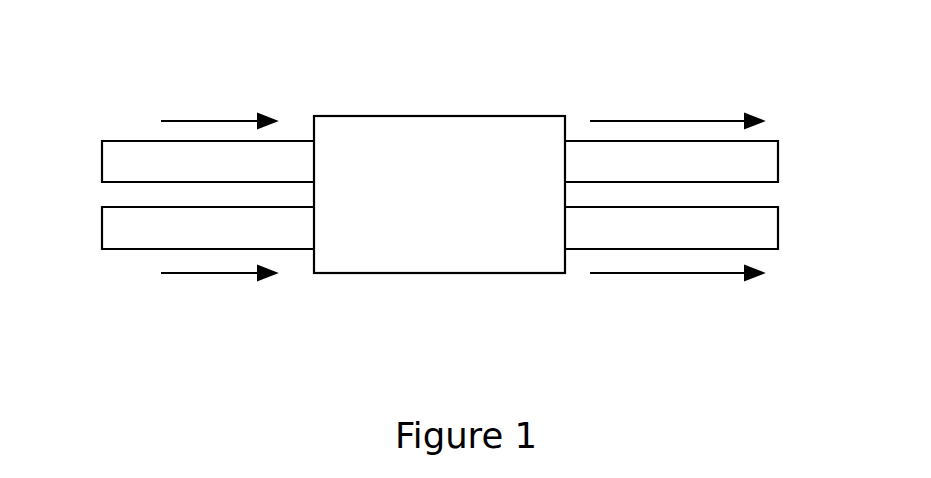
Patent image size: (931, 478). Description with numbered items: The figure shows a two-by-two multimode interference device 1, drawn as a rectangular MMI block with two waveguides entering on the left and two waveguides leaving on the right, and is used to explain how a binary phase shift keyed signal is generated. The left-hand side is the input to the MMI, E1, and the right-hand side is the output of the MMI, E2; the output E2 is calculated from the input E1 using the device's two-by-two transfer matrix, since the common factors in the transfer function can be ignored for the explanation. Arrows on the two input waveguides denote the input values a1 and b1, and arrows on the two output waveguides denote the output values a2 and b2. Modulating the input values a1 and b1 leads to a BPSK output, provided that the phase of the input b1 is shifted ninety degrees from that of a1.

The 2×2 multimode interference (MMI) device 1 is at (435, 116).
The input to the MMI E1 is at (175, 195).
The output of the MMI E2 is at (701, 195).
The input value a1 is at (218, 97).
The input value b1 is at (218, 296).
The output value a2 is at (676, 97).
The output value b2 is at (676, 296).